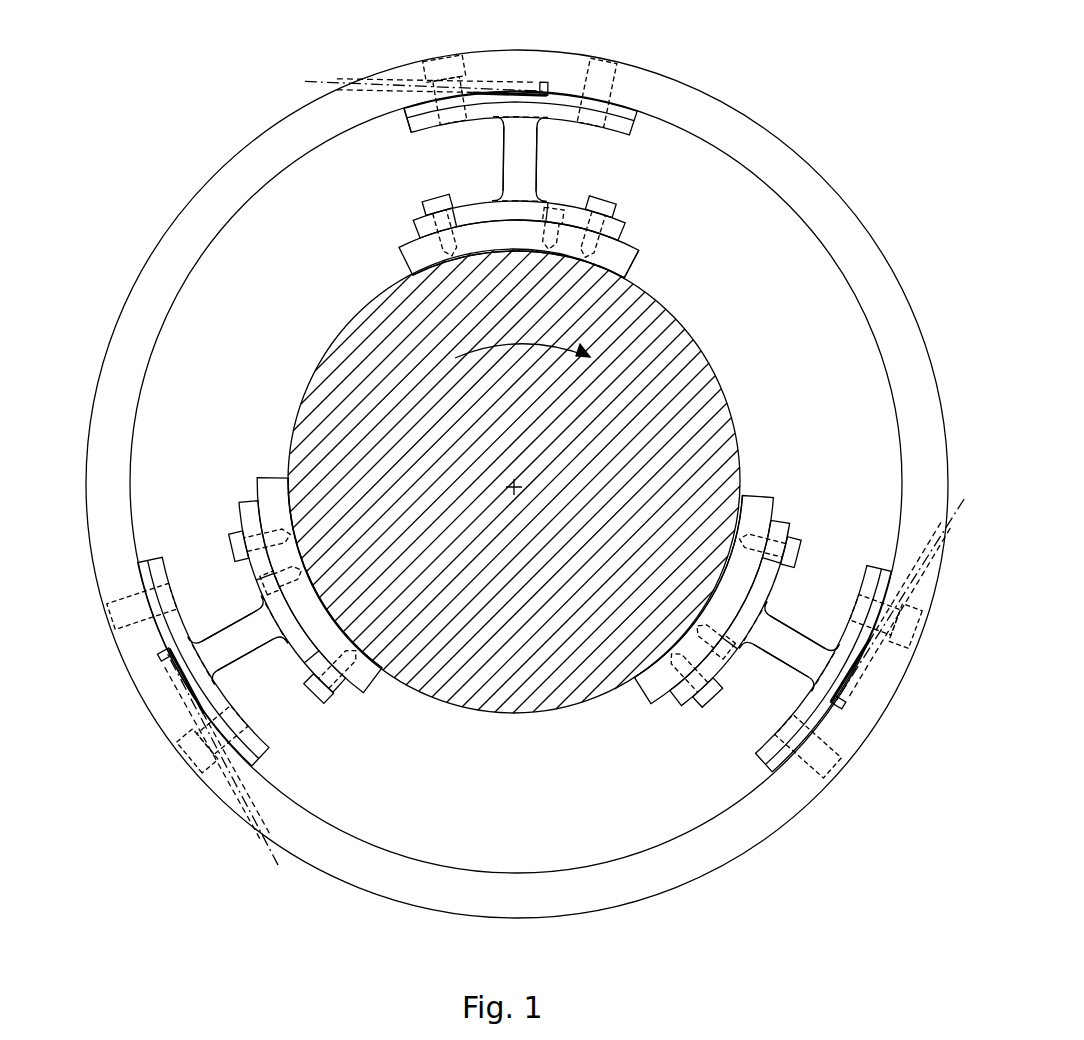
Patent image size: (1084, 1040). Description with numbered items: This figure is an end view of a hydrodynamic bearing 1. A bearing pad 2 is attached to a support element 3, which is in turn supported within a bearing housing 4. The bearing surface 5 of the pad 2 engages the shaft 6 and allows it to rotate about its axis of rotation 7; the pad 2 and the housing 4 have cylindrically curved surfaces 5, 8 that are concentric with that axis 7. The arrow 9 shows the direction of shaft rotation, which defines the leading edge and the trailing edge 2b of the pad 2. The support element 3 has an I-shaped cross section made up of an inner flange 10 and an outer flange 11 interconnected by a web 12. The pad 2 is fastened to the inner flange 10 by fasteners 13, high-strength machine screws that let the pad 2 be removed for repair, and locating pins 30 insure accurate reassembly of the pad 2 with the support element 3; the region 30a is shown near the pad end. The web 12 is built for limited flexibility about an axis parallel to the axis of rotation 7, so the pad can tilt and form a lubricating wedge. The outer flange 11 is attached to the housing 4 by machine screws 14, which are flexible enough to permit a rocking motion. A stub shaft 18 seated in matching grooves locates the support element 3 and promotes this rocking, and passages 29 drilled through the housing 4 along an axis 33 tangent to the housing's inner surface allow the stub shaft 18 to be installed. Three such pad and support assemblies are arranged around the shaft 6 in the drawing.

The hydrodynamic bearing 1 is at (729, 83).
The bearing pad 2 is at (627, 268).
The trailing edge 2b is at (638, 258).
The support element 3 is at (440, 175).
The bearing housing 4 is at (758, 826).
The bearing surface 5 is at (440, 271).
The shaft 6 is at (521, 714).
The axis of rotation 7 is at (510, 480).
The cylindrically curved surface of housing 8 is at (469, 870).
The arrow 9 is at (514, 353).
The inner flange 10 is at (618, 221).
The outer flange 11 is at (432, 130).
The web 12 is at (528, 143).
The fasteners 13 is at (600, 200).
The machine screws 14 is at (598, 72).
The stub shaft 18 is at (531, 90).
The passages 29 is at (400, 76).
The locating pins 30 is at (551, 208).
The screw end 30a is at (616, 275).
The axis 33 is at (312, 85).